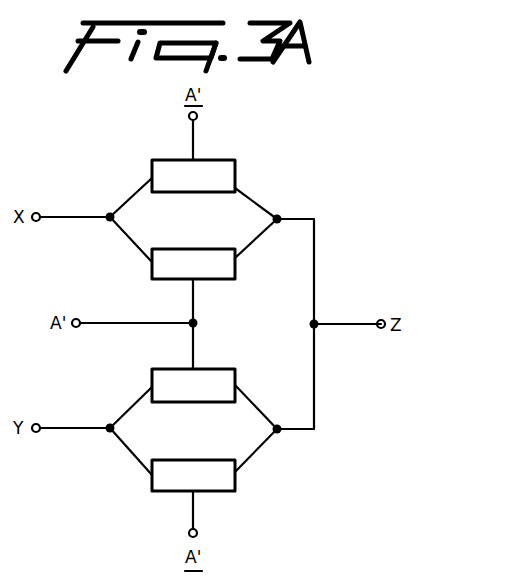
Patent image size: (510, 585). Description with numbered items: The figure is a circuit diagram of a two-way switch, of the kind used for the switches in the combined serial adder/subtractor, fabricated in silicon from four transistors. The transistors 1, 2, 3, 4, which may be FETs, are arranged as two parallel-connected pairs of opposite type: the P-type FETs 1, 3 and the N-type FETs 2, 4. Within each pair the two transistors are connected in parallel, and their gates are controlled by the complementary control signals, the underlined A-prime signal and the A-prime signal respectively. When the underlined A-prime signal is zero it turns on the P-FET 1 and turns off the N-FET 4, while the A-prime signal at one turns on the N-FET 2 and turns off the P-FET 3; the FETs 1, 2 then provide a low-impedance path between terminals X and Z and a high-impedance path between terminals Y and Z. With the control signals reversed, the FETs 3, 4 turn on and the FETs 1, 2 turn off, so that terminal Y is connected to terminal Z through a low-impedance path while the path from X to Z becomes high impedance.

The P-type FET 1 is at (235, 165).
The N-type FET 2 is at (235, 272).
The P-type FET 3 is at (235, 378).
The N-type FET 4 is at (235, 480).